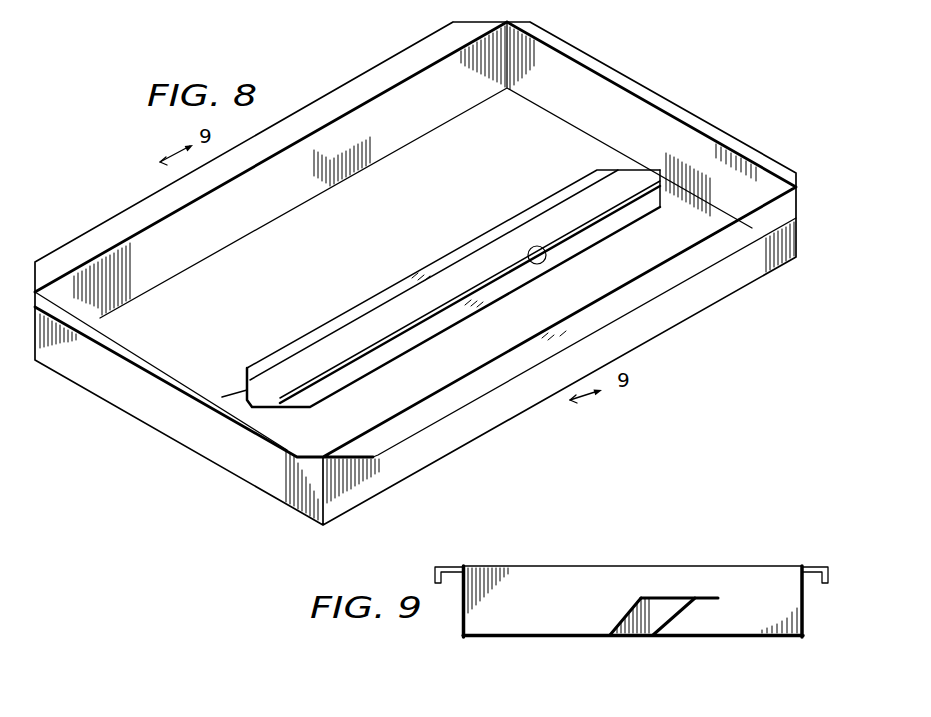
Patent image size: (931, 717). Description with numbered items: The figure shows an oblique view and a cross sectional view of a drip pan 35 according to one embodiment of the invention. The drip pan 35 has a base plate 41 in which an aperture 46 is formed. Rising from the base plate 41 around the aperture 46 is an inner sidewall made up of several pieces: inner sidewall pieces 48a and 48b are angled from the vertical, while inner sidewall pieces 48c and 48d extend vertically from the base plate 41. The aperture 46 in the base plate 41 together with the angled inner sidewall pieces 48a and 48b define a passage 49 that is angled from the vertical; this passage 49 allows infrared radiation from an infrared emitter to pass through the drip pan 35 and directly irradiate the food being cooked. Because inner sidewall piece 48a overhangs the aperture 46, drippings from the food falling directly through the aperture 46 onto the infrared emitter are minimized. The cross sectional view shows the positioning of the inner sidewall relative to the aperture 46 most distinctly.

In FIG. 8, the drip pan 35 is at (683, 344).
In FIG. 9, the drip pan 35 is at (750, 540).
In FIG. 8, the base plate 41 is at (463, 118).
In FIG. 9, the base plate 41 is at (538, 640).
In FIG. 8, the aperture 46 is at (435, 285).
In FIG. 9, the aperture 46 is at (660, 606).
In FIG. 8, the inner sidewall piece 48a is at (231, 391).
In FIG. 9, the inner sidewall piece 48a is at (624, 614).
In FIG. 8, the inner sidewall piece 48b is at (547, 259).
In FIG. 9, the inner sidewall piece 48b is at (697, 606).
In FIG. 8, the inner sidewall piece 48c is at (634, 187).
In FIG. 8, the inner sidewall piece 48d is at (262, 415).
In FIG. 8, the passage 49 is at (339, 291).
In FIG. 9, the passage 49 is at (667, 578).